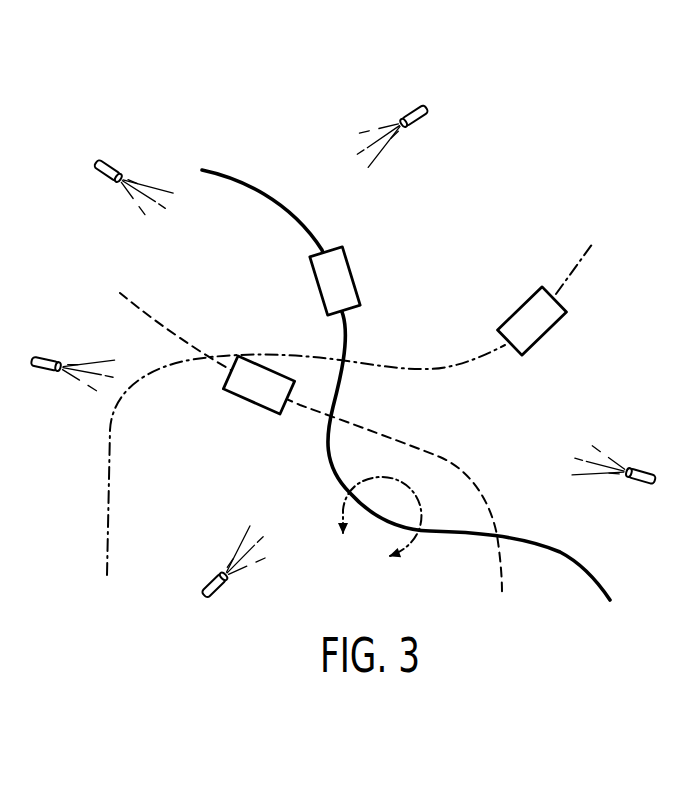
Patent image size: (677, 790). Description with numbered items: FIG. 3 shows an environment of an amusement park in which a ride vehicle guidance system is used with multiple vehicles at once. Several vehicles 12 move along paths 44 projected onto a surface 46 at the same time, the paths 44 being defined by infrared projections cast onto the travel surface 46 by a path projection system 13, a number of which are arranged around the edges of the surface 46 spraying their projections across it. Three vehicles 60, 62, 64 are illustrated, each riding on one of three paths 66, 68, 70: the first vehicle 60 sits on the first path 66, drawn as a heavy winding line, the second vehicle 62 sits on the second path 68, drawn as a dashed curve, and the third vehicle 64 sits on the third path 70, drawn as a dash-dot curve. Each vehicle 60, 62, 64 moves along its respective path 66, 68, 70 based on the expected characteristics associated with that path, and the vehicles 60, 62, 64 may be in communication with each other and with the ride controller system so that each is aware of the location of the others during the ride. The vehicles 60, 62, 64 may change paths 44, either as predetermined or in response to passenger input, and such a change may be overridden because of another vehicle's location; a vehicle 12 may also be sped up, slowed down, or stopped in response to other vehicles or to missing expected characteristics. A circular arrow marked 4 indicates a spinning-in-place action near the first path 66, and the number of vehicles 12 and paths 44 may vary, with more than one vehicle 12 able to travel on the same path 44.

The section line 4- 4 is at (375, 533).
The vehicle 12 is at (398, 346).
The path projection system 13 is at (112, 162).
The paths 44 is at (230, 275).
The surface 46 is at (478, 252).
The first vehicle 60 is at (350, 265).
The second vehicle 62 is at (255, 407).
The third vehicle 64 is at (537, 346).
The first path 66 is at (273, 193).
The second path 68 is at (440, 457).
The third path 70 is at (427, 368).